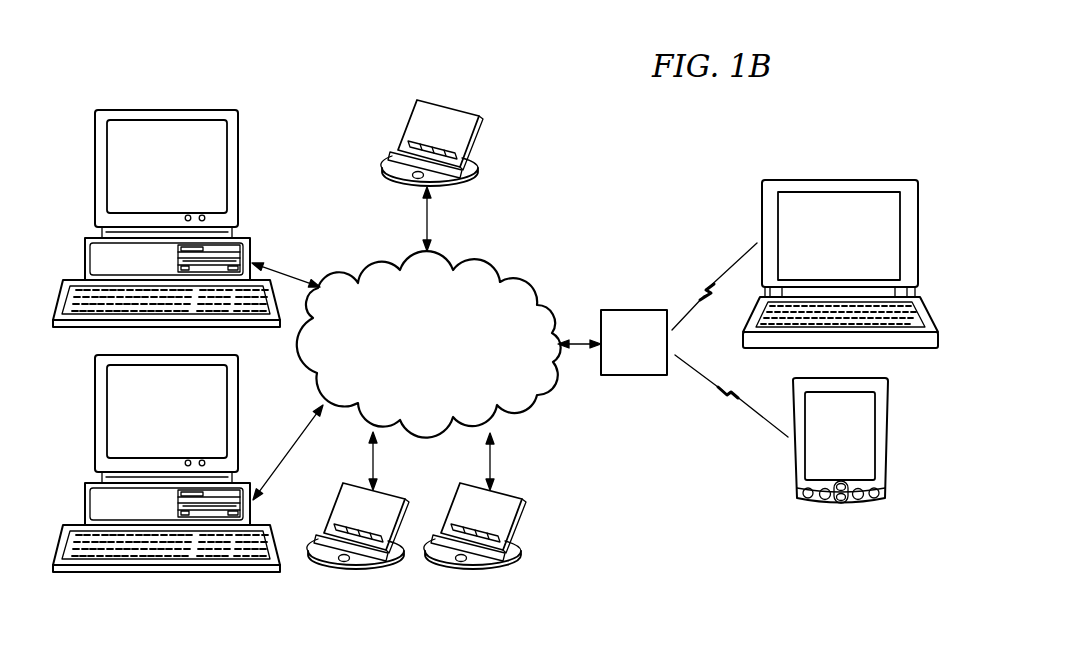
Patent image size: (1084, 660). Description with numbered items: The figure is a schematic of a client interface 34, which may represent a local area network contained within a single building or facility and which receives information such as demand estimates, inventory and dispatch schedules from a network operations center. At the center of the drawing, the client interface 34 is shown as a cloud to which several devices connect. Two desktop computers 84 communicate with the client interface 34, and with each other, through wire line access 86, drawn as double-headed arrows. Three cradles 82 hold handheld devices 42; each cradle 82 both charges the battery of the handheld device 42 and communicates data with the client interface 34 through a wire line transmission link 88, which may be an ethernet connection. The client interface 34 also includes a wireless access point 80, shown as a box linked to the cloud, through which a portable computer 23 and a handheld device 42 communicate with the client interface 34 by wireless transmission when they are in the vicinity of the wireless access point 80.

The desktop computer 84 is at (163, 110).
The cradle 82 is at (447, 104).
The wire line transmission link 88 is at (430, 227).
The wire line access 86 is at (283, 275).
The client interface 34 is at (441, 385).
The wireless access point 80 is at (633, 310).
The portable computer 23 is at (838, 180).
The handheld device 42 is at (849, 505).